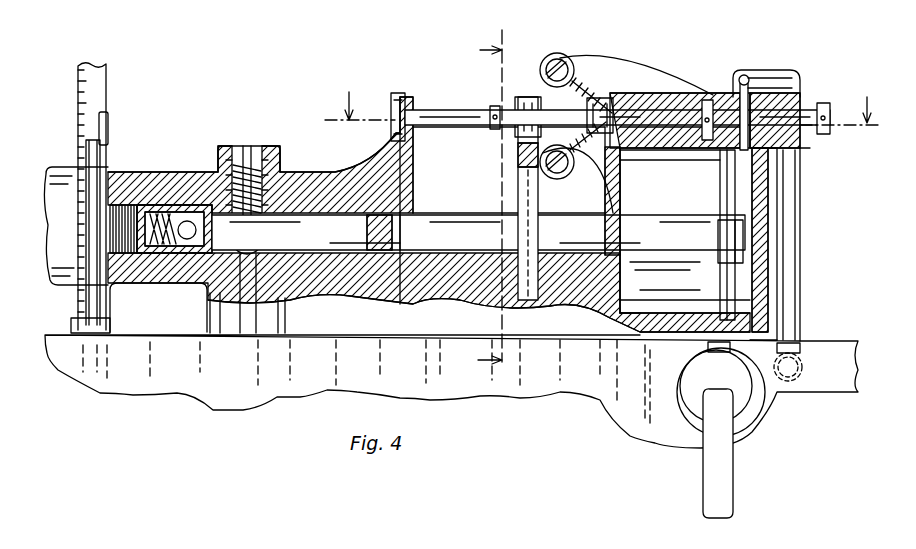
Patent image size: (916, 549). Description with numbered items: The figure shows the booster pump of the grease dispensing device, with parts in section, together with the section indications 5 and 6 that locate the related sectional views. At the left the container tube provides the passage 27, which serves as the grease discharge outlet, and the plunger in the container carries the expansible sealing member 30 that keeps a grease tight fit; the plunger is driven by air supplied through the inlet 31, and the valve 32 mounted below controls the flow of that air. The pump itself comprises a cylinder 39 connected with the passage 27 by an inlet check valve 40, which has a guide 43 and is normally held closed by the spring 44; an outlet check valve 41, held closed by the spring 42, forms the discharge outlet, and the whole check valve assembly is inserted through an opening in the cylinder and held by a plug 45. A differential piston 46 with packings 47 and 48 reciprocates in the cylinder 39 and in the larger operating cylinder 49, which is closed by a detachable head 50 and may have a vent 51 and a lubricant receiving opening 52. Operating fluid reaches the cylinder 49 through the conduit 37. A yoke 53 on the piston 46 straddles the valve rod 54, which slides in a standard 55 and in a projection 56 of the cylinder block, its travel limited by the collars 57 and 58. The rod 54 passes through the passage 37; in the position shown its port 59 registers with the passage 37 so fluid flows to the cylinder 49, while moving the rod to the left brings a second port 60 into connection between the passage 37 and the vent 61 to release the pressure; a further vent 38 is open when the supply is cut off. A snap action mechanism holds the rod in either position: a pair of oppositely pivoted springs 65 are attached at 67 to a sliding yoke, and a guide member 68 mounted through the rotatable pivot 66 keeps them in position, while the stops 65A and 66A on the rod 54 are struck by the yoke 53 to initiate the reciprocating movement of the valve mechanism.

The passage 27 is at (212, 286).
The expansible sealing member 30 is at (97, 122).
The inlet 31 is at (90, 198).
The valve 32 is at (723, 483).
The conduit 37 is at (715, 92).
The vent 38 is at (790, 223).
The cylinder 39 is at (478, 239).
The inlet check valve 40 is at (232, 222).
The outlet check valve 41 is at (183, 207).
The spring 42 is at (153, 223).
The guide 43 is at (270, 177).
The spring 44 is at (429, 244).
The plug 45 is at (232, 165).
The differential piston 46 is at (457, 220).
The packing 47 is at (400, 193).
The packing 48 is at (727, 192).
The operating cylinder 49 is at (653, 153).
The head 50 is at (760, 197).
The vent 51 is at (600, 177).
The lubricant receiving opening 52 is at (620, 275).
The yoke 53 is at (520, 155).
The valve rod 54 is at (465, 114).
The standard 55 is at (380, 152).
The projection 56 is at (803, 92).
The collar 57 is at (702, 107).
The collar 58 is at (829, 104).
The port 59 is at (736, 80).
The second port 60 is at (777, 97).
The vent 61 is at (780, 148).
The springs 65 is at (580, 83).
The stop 65A is at (495, 112).
The rotatable pivot 66 is at (560, 53).
The stop 66A is at (560, 115).
The spring attachment 67 is at (610, 97).
The guide member 68 is at (548, 63).
The section line 5- 5 is at (603, 96).
The section line 6- 6 is at (478, 200).